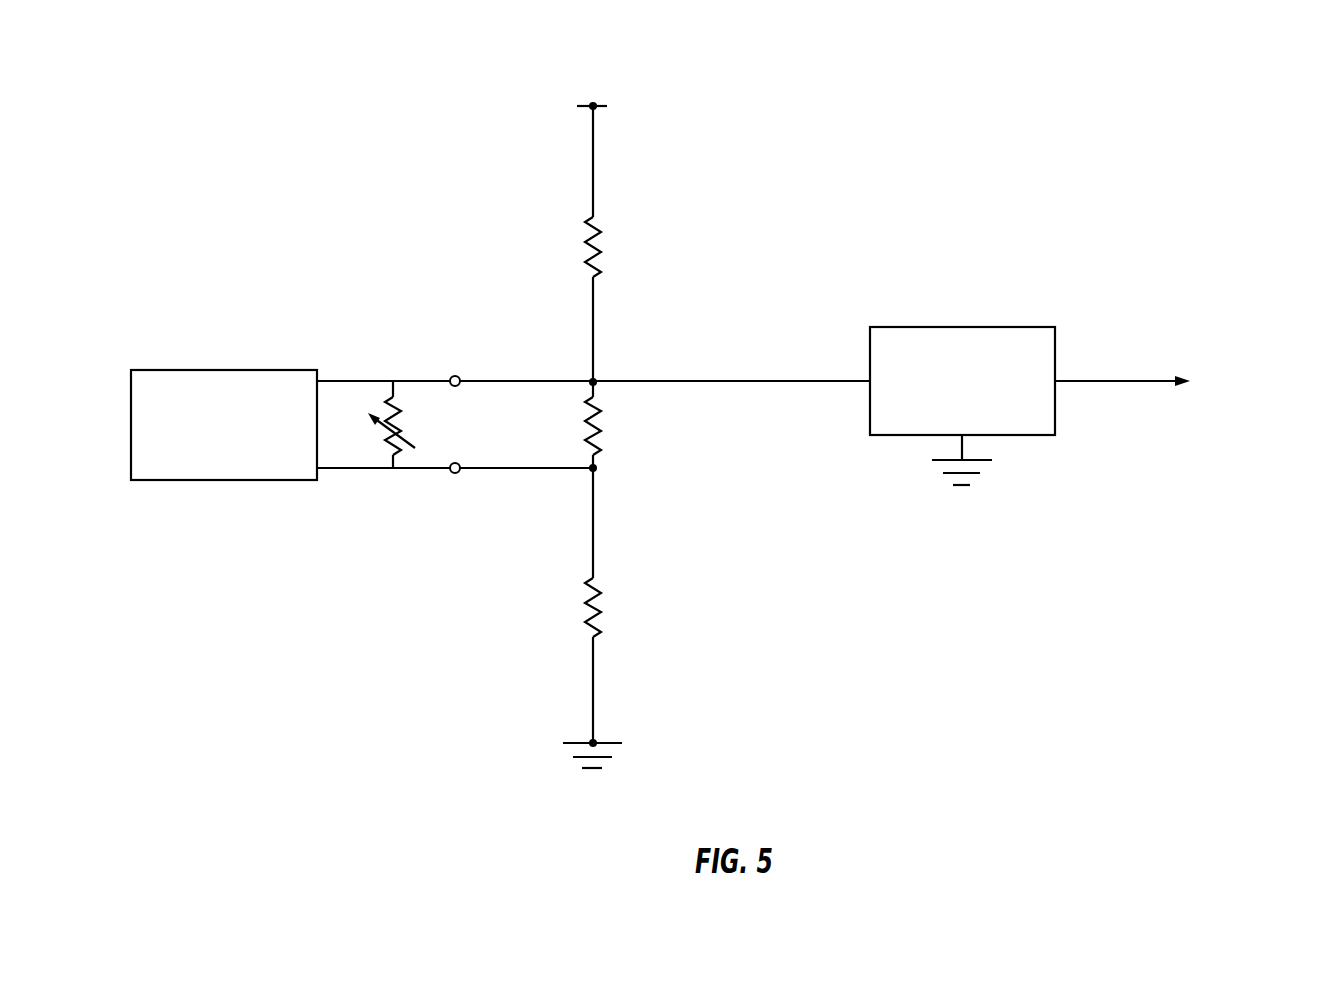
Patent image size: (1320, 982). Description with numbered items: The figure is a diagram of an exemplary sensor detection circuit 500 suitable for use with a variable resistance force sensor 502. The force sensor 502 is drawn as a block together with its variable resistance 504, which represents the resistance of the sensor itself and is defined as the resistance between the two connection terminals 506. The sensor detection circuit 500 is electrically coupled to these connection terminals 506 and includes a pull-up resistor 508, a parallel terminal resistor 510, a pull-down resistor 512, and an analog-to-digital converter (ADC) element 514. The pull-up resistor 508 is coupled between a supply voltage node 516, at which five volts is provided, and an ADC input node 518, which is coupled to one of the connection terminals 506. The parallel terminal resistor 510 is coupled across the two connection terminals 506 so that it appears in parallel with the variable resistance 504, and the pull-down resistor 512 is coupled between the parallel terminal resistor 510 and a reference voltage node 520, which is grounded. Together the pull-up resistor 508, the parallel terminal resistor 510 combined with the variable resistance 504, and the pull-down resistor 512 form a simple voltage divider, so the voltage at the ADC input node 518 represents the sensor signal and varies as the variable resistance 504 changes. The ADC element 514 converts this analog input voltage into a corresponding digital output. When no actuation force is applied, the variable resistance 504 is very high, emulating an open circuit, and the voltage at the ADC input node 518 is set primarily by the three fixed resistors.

The sensor detection circuit 500 is at (313, 106).
The variable resistance force sensor 502 is at (200, 370).
The variable resistance 504 is at (400, 428).
The connection terminals 506 is at (455, 376).
The pull-up resistor 508 is at (600, 243).
The parallel terminal resistor 510 is at (600, 425).
The pull-down resistor 512 is at (600, 605).
The analog-to-digital converter (ADC) element 514 is at (962, 327).
The supply voltage node 516 is at (600, 108).
The ADC input node 518 is at (735, 381).
The reference voltage node 520 is at (598, 743).